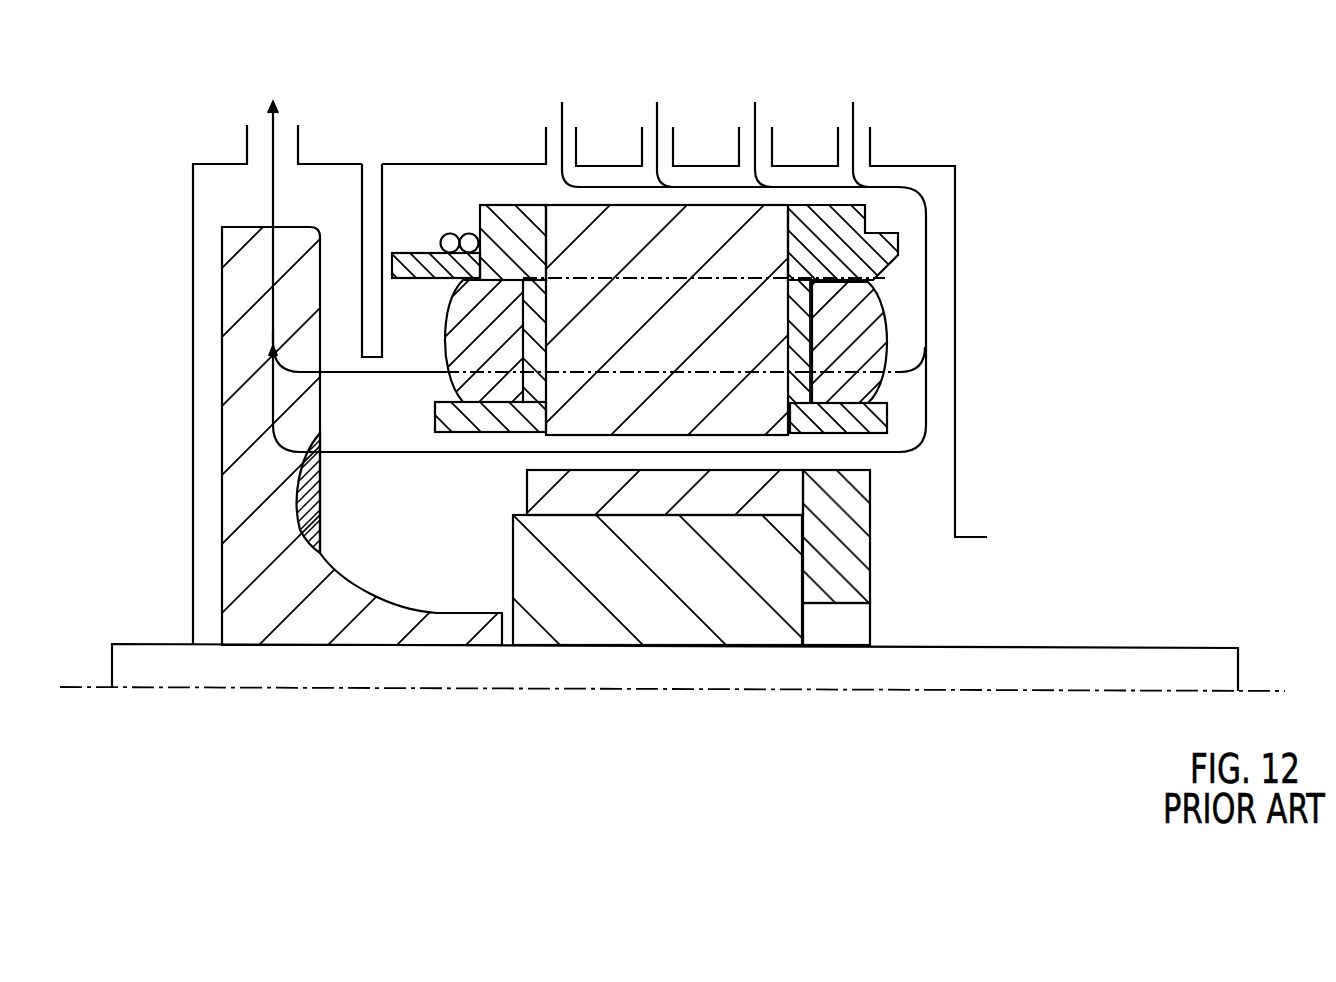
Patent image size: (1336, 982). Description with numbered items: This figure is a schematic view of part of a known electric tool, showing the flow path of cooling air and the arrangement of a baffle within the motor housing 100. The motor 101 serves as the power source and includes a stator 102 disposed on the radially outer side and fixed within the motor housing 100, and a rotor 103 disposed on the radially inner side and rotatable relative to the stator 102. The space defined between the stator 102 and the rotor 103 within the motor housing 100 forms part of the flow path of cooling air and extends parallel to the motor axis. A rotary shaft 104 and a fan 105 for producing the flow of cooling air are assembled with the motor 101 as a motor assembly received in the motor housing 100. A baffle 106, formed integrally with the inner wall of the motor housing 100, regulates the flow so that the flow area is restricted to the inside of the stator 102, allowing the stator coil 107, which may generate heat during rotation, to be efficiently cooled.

The motor housing 100 is at (204, 127).
The motor 101 is at (414, 184).
The stator 102 is at (621, 196).
The rotor 103 is at (506, 570).
The rotary shaft 104 is at (292, 667).
The fan 105 is at (214, 489).
The baffle 106 is at (373, 280).
The stator coil 107 is at (463, 338).